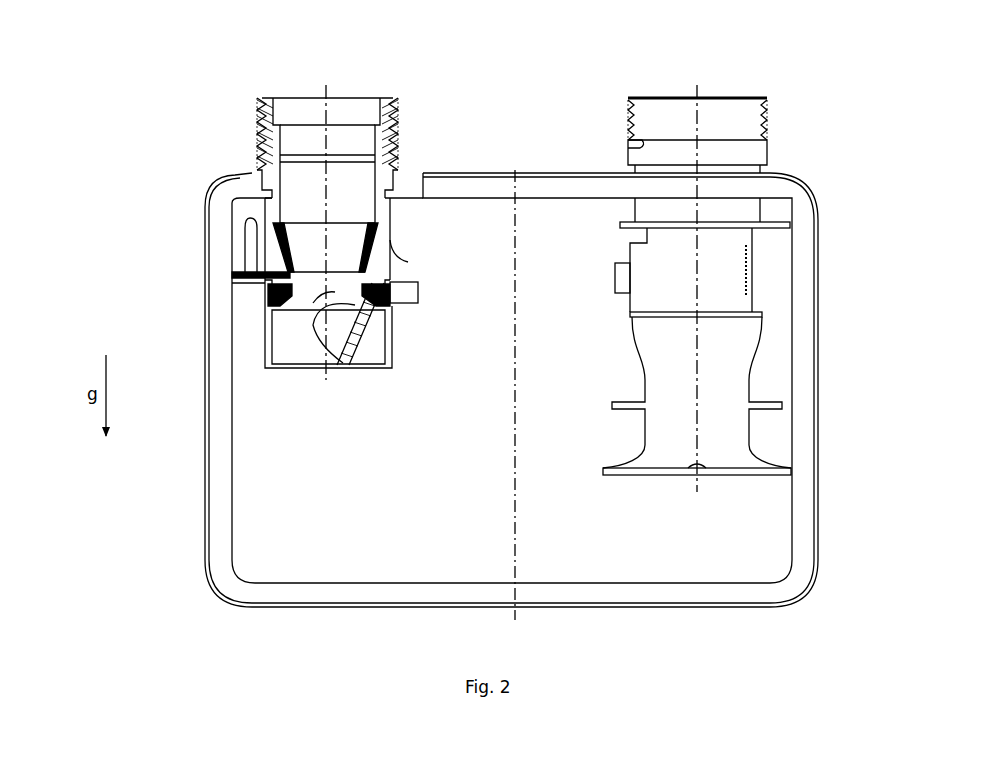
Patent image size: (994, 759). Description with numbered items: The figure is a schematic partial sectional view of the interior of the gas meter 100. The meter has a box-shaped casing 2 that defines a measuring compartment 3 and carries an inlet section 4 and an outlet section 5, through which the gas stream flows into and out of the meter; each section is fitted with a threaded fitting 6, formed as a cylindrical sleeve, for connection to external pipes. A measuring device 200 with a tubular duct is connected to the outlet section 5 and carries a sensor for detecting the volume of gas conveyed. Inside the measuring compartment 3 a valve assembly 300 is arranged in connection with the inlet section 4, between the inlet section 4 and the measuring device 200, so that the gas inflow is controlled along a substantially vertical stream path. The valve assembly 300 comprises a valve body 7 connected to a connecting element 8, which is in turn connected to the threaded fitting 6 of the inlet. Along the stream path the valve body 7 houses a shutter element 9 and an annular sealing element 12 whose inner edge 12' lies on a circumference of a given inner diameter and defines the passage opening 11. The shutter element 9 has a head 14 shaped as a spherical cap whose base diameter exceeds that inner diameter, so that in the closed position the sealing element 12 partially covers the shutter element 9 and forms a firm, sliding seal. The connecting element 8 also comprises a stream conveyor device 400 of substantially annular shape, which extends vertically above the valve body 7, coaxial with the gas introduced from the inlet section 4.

The casing 2 is at (205, 258).
The measuring compartment 3 is at (312, 503).
The inlet section 4 is at (322, 93).
The outlet section 5 is at (697, 80).
The threaded fitting 6 is at (392, 130).
The valve body 7 is at (257, 318).
The connecting element 8 is at (270, 222).
The shutter element 9 is at (374, 330).
The passage opening 11 is at (310, 296).
The sealing element 12 is at (309, 281).
The inner edge 12' is at (325, 248).
The head 14 is at (362, 348).
The gas meter 100 is at (174, 373).
The measuring device 200 is at (605, 327).
The valve assembly 300 is at (430, 253).
The stream conveyor device 400 is at (360, 218).